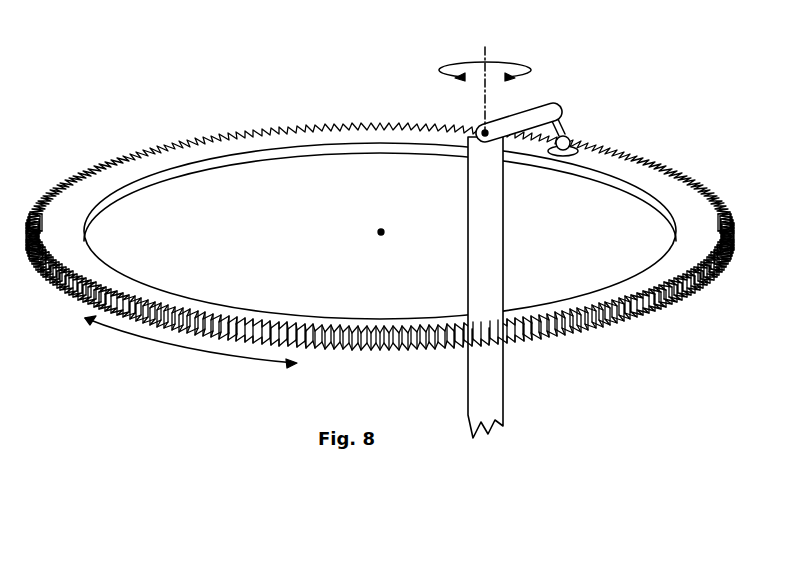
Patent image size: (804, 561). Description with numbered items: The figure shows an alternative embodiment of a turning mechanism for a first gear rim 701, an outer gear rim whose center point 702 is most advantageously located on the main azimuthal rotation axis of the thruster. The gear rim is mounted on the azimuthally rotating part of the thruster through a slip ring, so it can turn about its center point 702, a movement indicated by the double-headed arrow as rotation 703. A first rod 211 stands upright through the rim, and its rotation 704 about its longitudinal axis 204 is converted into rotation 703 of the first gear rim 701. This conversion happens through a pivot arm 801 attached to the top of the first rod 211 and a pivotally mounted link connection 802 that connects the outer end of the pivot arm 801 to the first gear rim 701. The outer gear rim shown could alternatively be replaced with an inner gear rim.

The first gear rim 701 is at (138, 168).
The center point 702 is at (381, 230).
The rotation of the first gear rim 703 is at (157, 345).
The first rod 211 is at (503, 399).
The pivot arm 801 is at (482, 130).
The link connection 802 is at (572, 121).
The longitudinal axis 204 is at (490, 54).
The rotation of the first rod 704 is at (533, 72).